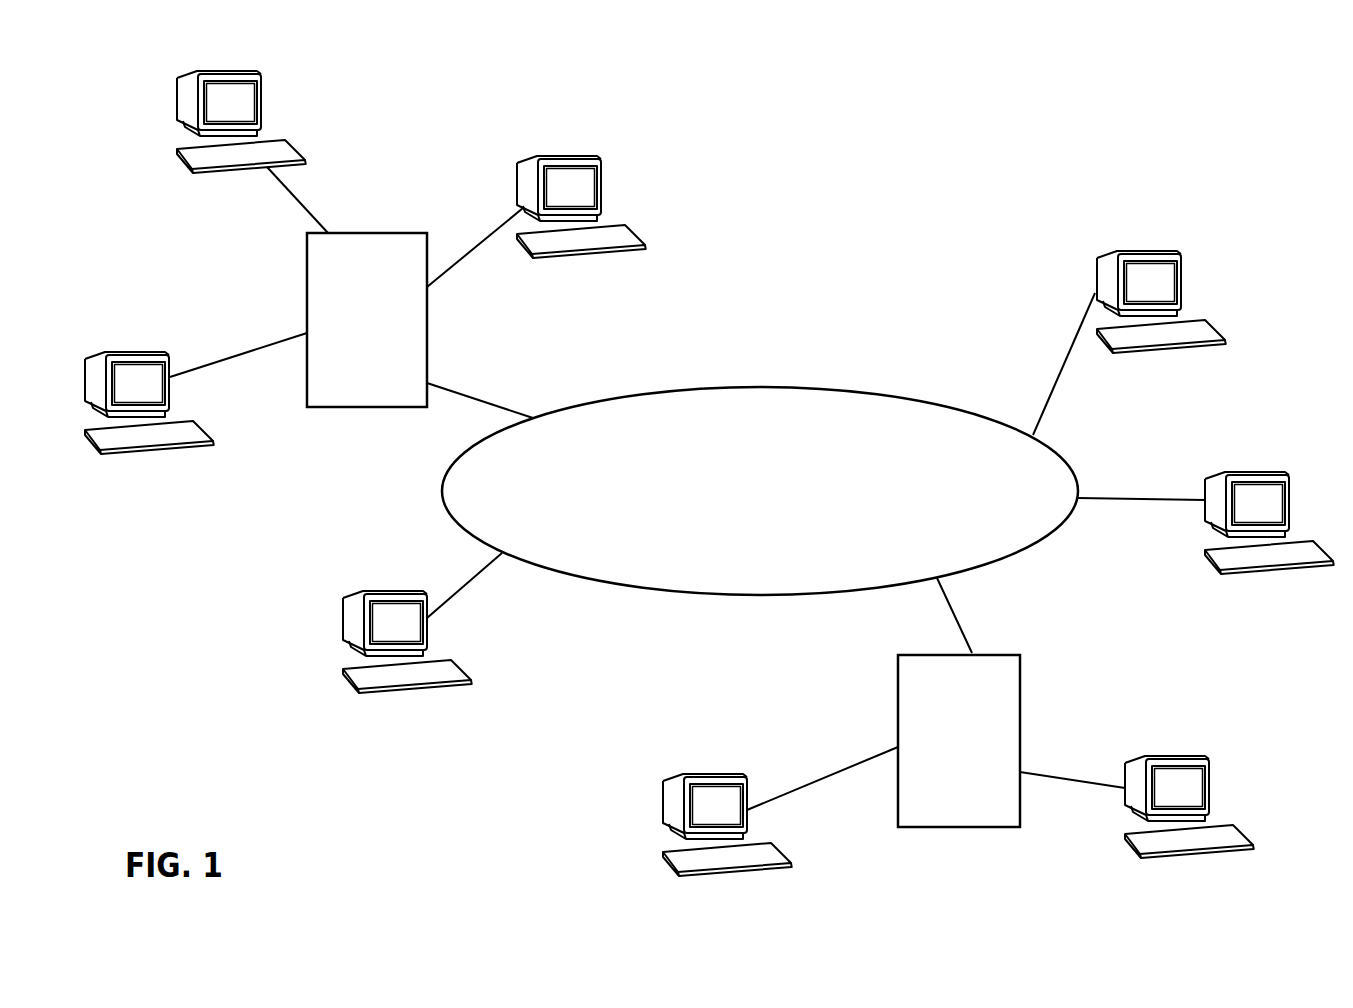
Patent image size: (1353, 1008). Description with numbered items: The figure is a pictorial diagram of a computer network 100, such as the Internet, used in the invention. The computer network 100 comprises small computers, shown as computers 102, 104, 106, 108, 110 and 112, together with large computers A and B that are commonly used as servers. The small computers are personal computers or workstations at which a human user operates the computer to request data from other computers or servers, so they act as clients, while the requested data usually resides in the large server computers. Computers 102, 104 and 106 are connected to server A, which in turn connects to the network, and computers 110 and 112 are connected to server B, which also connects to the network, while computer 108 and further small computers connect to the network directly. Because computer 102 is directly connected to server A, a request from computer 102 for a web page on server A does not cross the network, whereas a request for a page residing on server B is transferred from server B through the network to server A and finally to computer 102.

The computer network 100 is at (1000, 210).
The computer 102 is at (602, 180).
The computer 104 is at (267, 103).
The computer 106 is at (165, 353).
The computer 108 is at (1183, 283).
The computer 110 is at (663, 812).
The computer 112 is at (1213, 778).